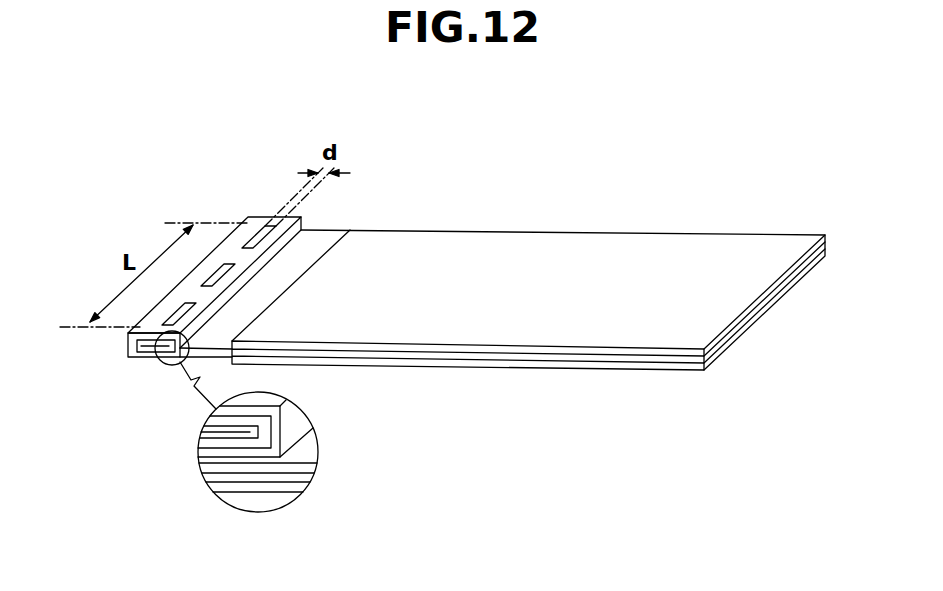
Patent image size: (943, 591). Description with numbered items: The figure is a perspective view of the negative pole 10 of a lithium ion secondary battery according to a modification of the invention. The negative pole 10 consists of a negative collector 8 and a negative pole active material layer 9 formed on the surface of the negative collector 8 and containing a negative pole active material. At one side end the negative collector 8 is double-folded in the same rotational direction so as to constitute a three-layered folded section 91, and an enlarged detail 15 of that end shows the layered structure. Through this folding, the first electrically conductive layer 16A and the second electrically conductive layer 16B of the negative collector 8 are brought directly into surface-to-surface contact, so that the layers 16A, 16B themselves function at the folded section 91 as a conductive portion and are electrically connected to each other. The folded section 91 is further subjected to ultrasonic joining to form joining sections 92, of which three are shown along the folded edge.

The negative collector 8 is at (328, 240).
The negative pole active material layer 9 is at (673, 257).
The negative pole 10 is at (541, 267).
The laminated structure 15 is at (208, 475).
The first electrically conductive layer 16A is at (200, 437).
The second electrically conductive layer 16B is at (277, 433).
The folded section 91 is at (180, 370).
The joining sections 92 is at (255, 238).